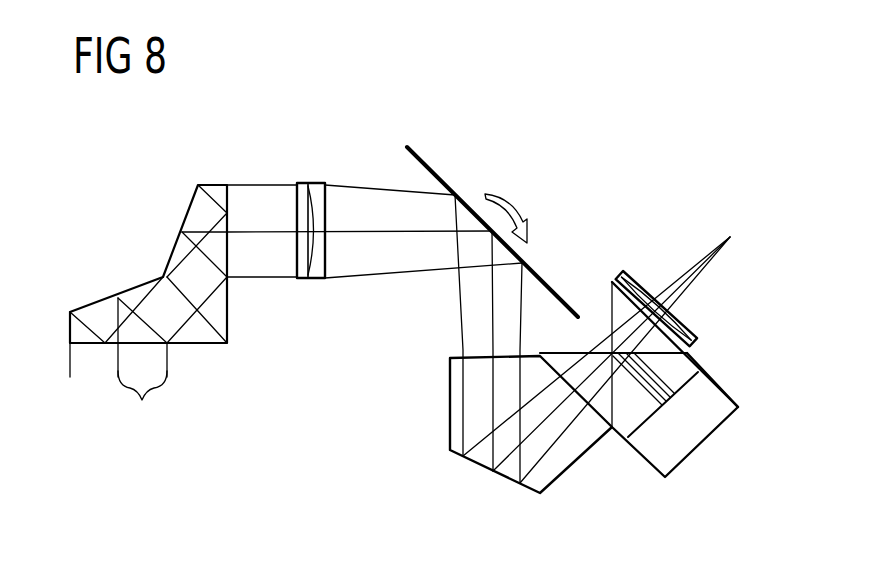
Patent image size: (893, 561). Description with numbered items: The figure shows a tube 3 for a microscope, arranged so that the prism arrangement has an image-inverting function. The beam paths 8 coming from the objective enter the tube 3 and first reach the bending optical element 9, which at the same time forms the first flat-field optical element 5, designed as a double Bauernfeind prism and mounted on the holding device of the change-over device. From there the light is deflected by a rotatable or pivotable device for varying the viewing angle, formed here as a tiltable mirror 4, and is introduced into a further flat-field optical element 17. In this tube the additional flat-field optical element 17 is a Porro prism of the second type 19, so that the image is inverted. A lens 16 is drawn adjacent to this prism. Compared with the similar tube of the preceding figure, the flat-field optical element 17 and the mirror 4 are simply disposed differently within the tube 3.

The tube 3 is at (484, 119).
The tiltable mirror 4 is at (533, 271).
The first flat-field optical element 5 is at (138, 293).
The beam paths 8 is at (142, 388).
The bending optical element 9 is at (102, 312).
The lens 16 is at (628, 278).
The flat-field optical element 17 is at (673, 455).
The Porro prism of the second type 19 is at (663, 404).